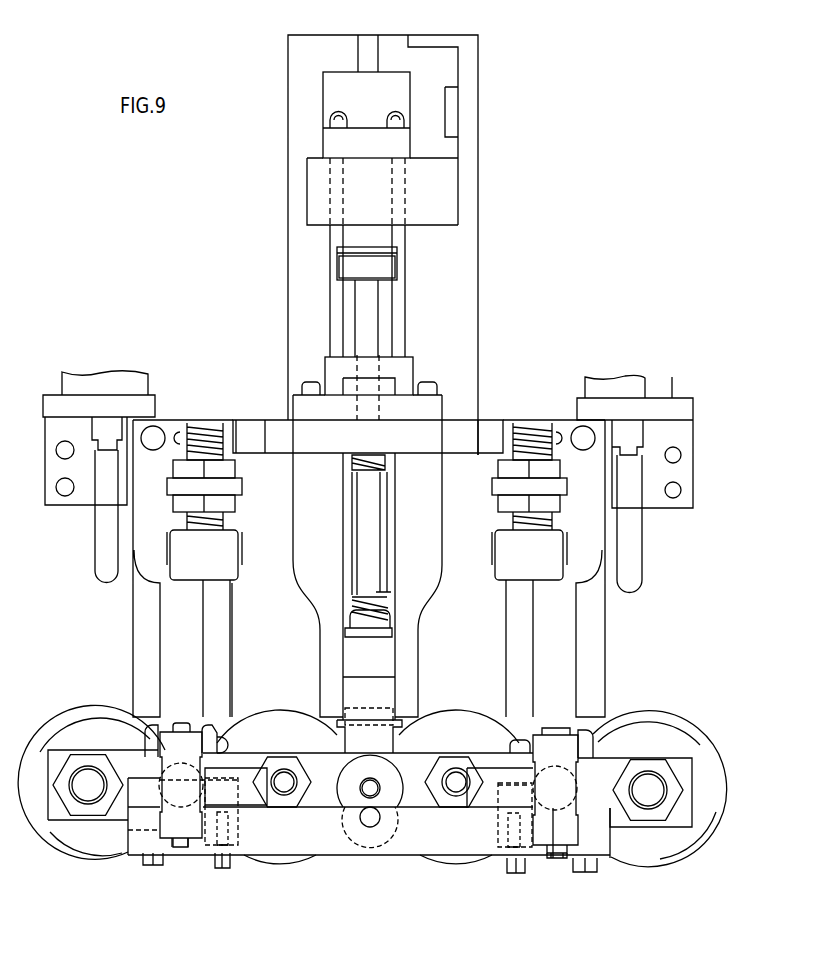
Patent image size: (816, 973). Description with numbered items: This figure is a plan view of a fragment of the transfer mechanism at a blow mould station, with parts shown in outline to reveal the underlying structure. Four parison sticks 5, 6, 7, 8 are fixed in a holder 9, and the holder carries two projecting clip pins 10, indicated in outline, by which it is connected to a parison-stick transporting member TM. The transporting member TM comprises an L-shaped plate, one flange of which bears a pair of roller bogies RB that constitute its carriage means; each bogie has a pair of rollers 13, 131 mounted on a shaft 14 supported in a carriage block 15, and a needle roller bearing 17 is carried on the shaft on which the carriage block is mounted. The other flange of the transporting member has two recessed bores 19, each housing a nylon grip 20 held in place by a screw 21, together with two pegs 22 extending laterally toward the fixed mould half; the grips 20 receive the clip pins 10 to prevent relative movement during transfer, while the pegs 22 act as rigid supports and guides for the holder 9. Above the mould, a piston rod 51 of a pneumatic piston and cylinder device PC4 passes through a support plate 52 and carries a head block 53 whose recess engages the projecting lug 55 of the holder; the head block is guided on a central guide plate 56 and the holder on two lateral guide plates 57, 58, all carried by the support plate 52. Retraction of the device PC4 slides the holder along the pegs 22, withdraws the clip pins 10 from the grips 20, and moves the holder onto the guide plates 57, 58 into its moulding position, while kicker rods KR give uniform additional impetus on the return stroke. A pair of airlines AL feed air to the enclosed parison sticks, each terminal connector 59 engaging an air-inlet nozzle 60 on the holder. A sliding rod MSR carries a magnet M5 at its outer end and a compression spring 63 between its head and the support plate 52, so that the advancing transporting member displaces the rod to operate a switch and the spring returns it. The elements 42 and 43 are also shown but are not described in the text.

The parison stick 5 is at (676, 721).
The parison stick 6 is at (430, 860).
The parison stick 7 is at (283, 862).
The parison stick 8 is at (92, 862).
The holder 9 is at (652, 825).
The clip pin 10 is at (238, 822).
The roller 13 is at (185, 825).
The roller 131 is at (172, 733).
The shaft 14 is at (183, 847).
The carriage block 15 is at (170, 795).
The needle roller bearing 17 is at (157, 775).
The recessed bore 19 is at (498, 833).
The grip 20 is at (498, 845).
The screw 21 is at (227, 867).
The peg 22 is at (145, 735).
The pin 42 is at (360, 817).
The hub 43 is at (377, 788).
The piston rod 51 is at (383, 527).
The support plate 52 is at (455, 450).
The head block 53 is at (393, 693).
The projecting lug 55 is at (357, 749).
The guide plate 56 is at (415, 640).
The lateral guide plate 57 is at (232, 655).
The lateral guide plate 58 is at (604, 655).
The terminal connector 59 is at (189, 564).
The air-inlet nozzle 60 is at (214, 740).
The compression spring 63 is at (393, 598).
The airline AL is at (207, 427).
The kicker rod KR is at (102, 552).
The pneumatic piston and cylinder device PC4 is at (400, 239).
The magnet M5 is at (383, 268).
The sliding rod MSR is at (367, 505).
The roller bogie RB is at (226, 748).
The parison-stick transporting member TM is at (343, 860).